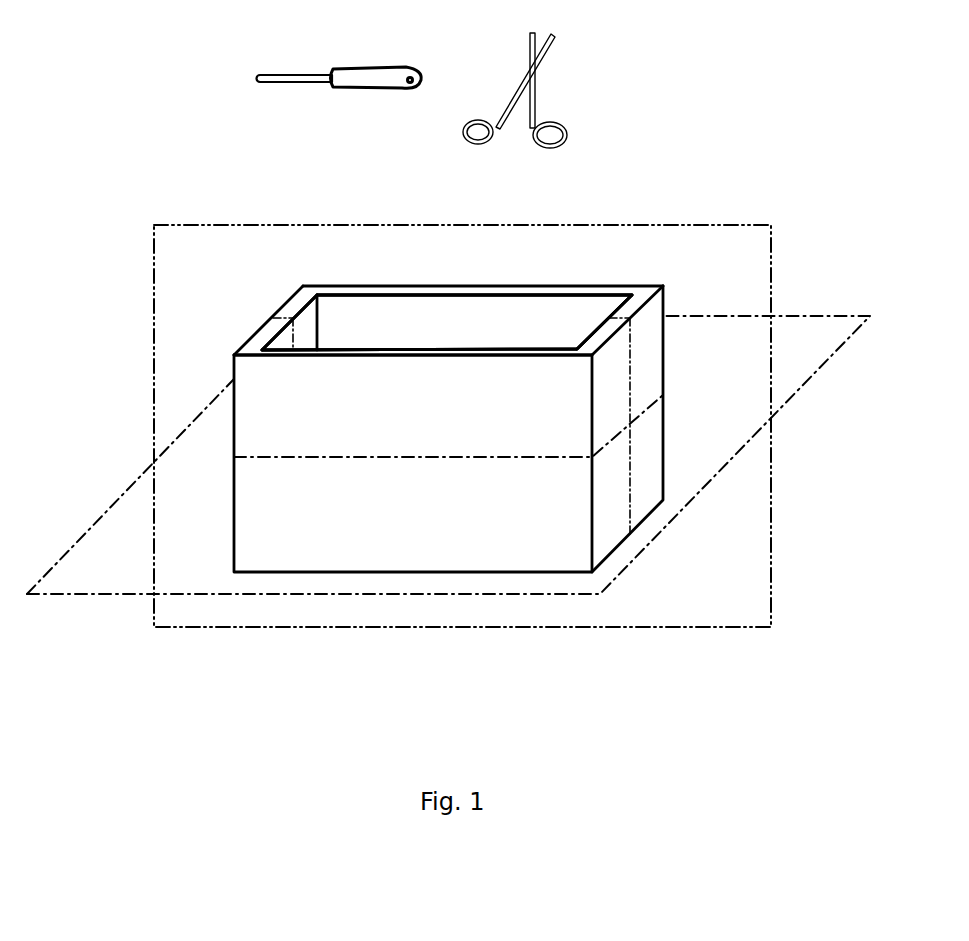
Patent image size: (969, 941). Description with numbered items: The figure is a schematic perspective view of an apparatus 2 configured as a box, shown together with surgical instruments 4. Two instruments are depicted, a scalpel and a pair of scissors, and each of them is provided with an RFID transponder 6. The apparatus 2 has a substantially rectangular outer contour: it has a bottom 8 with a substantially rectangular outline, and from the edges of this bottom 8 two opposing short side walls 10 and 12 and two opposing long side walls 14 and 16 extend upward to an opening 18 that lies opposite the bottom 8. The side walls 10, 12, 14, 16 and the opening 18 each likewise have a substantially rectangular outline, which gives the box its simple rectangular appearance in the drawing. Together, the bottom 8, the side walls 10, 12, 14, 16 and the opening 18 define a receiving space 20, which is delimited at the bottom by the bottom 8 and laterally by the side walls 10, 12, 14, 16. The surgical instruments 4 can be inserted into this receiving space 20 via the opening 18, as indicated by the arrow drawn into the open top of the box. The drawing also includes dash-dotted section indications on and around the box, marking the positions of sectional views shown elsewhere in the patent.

The apparatus 2 is at (107, 328).
The surgical instruments 4 is at (212, 80).
The RFID transponder 6 is at (563, 138).
The bottom 8 is at (480, 572).
The short side wall 10 is at (295, 305).
The short side wall 12 is at (613, 323).
The long side wall 14 is at (485, 355).
The long side wall 16 is at (447, 287).
The opening 18 is at (337, 320).
The receiving space 20 is at (364, 330).